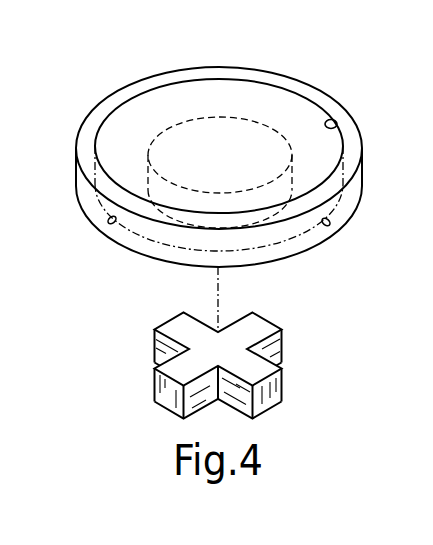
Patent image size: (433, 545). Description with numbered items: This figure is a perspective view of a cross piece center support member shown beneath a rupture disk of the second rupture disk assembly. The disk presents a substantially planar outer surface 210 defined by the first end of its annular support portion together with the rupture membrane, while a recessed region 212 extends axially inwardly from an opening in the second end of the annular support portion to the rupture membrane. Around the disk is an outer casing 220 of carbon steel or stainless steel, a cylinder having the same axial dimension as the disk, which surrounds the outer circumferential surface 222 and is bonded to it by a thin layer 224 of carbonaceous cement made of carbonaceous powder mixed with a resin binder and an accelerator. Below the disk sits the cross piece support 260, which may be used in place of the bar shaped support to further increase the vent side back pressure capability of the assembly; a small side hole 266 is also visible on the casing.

The outer surface 210 is at (318, 99).
The recessed region 212 is at (247, 152).
The outer casing 220 is at (354, 157).
The outer circumferential surface 222 is at (127, 88).
The layer of carbonaceous cement 224 is at (337, 121).
The cross piece support 260 is at (300, 341).
The side hole 266 is at (94, 200).